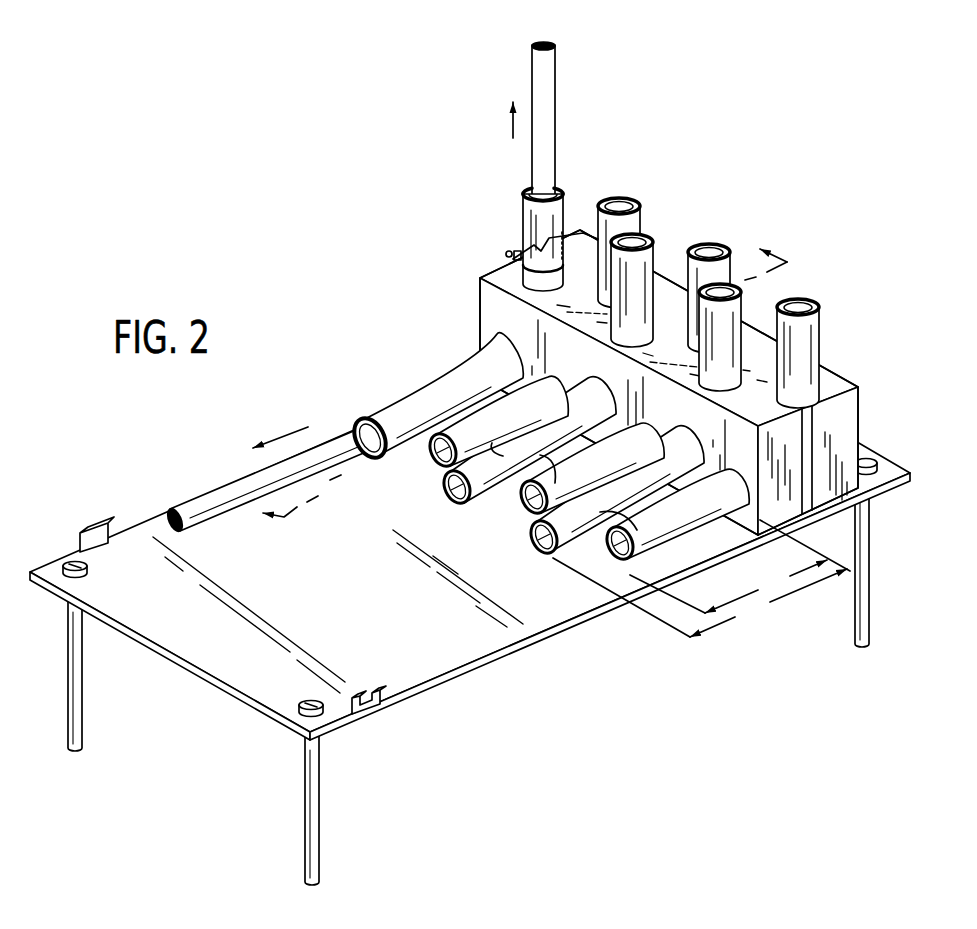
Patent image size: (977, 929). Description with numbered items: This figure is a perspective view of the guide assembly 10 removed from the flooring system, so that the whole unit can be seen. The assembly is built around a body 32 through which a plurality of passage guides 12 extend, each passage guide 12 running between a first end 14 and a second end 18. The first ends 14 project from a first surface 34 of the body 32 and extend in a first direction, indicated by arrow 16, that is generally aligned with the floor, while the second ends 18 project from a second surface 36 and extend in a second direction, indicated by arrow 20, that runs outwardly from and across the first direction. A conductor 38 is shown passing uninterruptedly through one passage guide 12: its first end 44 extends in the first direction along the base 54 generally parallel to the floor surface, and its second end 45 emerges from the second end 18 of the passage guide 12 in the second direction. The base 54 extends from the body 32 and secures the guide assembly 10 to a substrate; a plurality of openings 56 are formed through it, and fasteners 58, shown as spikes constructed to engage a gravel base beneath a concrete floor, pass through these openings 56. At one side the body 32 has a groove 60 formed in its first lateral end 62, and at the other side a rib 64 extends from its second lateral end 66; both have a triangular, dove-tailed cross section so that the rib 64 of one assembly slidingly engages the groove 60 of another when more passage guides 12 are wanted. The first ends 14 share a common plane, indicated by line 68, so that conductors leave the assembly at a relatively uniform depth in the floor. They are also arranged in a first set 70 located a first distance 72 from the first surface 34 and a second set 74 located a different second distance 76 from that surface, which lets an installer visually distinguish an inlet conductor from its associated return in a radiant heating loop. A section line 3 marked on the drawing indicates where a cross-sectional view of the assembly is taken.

The guide assembly 10 is at (815, 262).
The passage guide 12 is at (560, 172).
The first end 14 is at (470, 417).
The arrow 16 is at (287, 432).
The second end 18 is at (553, 221).
The arrow 20 is at (508, 130).
The body 32 is at (760, 412).
The first surface 34 is at (587, 366).
The second surface 36 is at (681, 340).
The conductor 38 is at (546, 91).
The first end 44 is at (178, 509).
The second end 45 is at (540, 63).
The base 54 is at (588, 638).
The openings 56 is at (884, 443).
The fasteners 58 is at (73, 565).
The groove 60 is at (808, 497).
The first lateral end 62 is at (849, 407).
The rib 64 is at (510, 240).
The second lateral end 66 is at (492, 261).
The line 68 is at (615, 569).
The first set 70 is at (398, 428).
The first distance 72 is at (701, 578).
The second set 74 is at (564, 488).
The second distance 76 is at (728, 586).
The section line 3- 3 is at (524, 386).